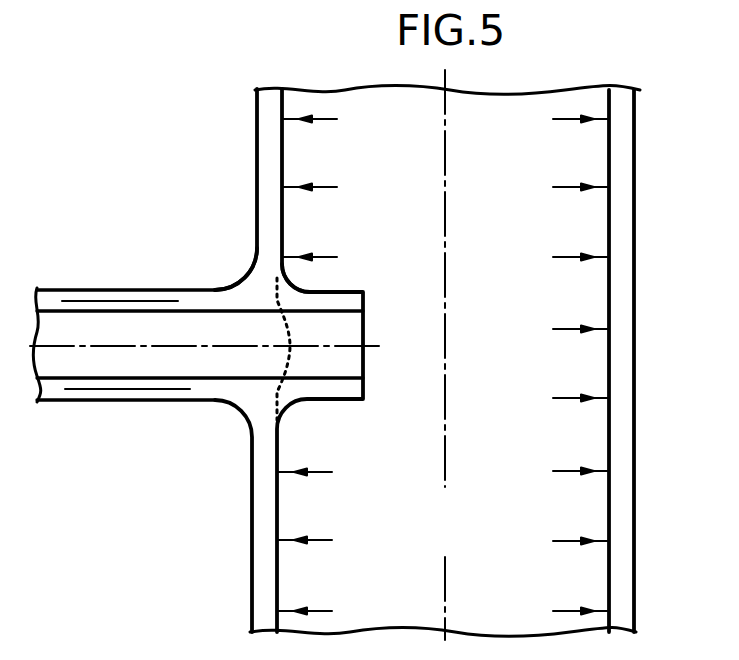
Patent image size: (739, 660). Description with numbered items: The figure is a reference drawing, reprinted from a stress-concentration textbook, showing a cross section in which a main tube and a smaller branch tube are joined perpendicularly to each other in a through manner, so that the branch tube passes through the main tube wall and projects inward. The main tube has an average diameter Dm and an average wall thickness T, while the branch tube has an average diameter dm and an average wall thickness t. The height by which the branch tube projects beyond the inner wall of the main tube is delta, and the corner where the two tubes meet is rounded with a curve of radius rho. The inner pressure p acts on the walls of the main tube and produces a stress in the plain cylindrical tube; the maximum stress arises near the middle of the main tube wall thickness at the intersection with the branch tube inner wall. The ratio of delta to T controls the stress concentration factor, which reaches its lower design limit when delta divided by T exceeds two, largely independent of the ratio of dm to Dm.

The inner pressure p is at (427, 355).
The average diameter of the branch tube dm is at (109, 300).
The average thickness of the branch tube t is at (199, 353).
The average thickness of the main tube T is at (207, 457).
The height by which the branch tube projects from the inner wall of the main tube delta is at (362, 457).
The average diameter of the main tube Dm is at (622, 560).
The radius of a curve at a corner formed by the main and branch tubes rho is at (240, 275).